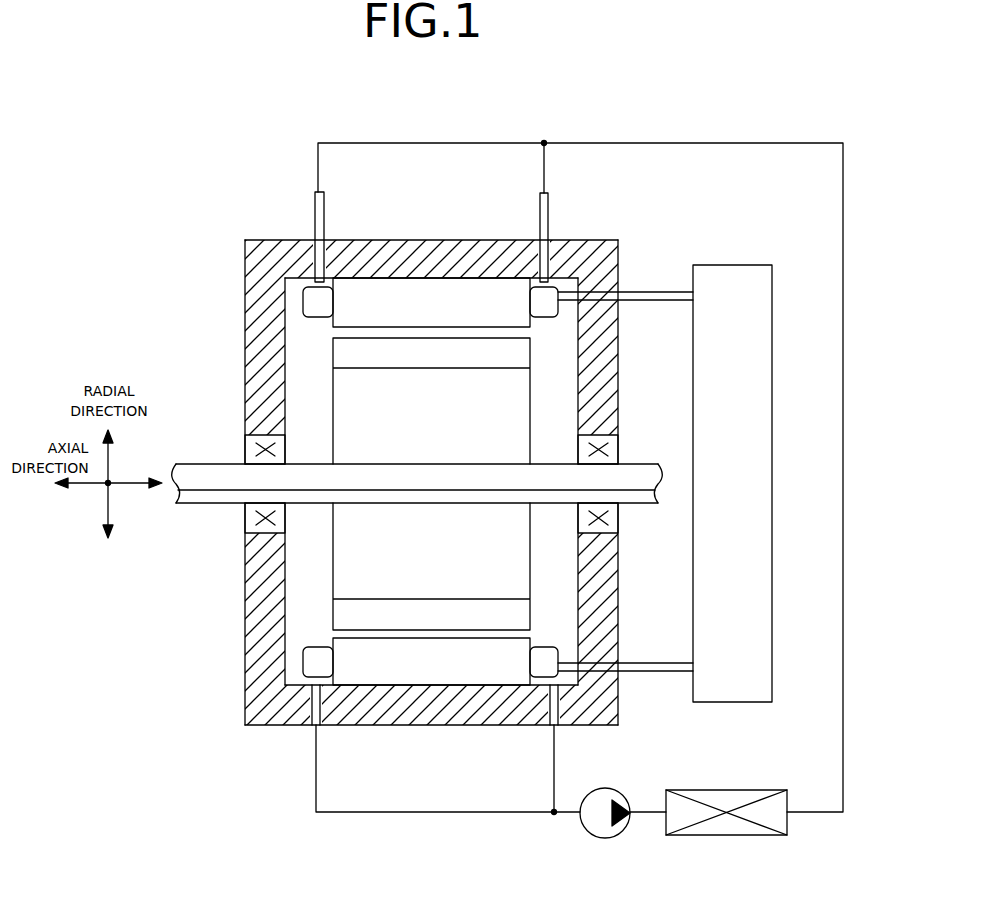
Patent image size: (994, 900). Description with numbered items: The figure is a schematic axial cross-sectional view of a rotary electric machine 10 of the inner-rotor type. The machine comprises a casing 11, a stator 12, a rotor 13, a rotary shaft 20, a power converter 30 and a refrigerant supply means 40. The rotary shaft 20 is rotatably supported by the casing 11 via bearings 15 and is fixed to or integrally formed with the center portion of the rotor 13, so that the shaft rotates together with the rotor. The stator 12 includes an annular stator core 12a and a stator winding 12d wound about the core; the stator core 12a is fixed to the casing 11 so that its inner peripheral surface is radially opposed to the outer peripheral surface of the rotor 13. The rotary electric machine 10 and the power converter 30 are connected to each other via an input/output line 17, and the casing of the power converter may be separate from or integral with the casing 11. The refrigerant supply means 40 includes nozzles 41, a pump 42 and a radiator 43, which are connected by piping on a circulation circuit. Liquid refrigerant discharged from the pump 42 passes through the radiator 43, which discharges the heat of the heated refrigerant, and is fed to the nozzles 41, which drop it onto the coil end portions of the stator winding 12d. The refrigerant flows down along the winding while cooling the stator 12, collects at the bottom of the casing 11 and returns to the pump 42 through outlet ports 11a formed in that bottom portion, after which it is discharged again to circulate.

The rotary electric machine 10 is at (232, 180).
The casing 11 is at (257, 297).
The outlet ports 11a is at (308, 698).
The stator 12 is at (404, 266).
The stator core 12a is at (370, 302).
The stator winding 12d is at (313, 300).
The rotor 13 is at (440, 387).
The bearings 15 is at (258, 437).
The input/output line 17 is at (663, 292).
The rotary shaft 20 is at (218, 478).
The power converter 30 is at (776, 318).
The refrigerant supply means 40 is at (658, 135).
The nozzles 41 is at (315, 215).
The pump 42 is at (603, 838).
The radiator 43 is at (716, 835).